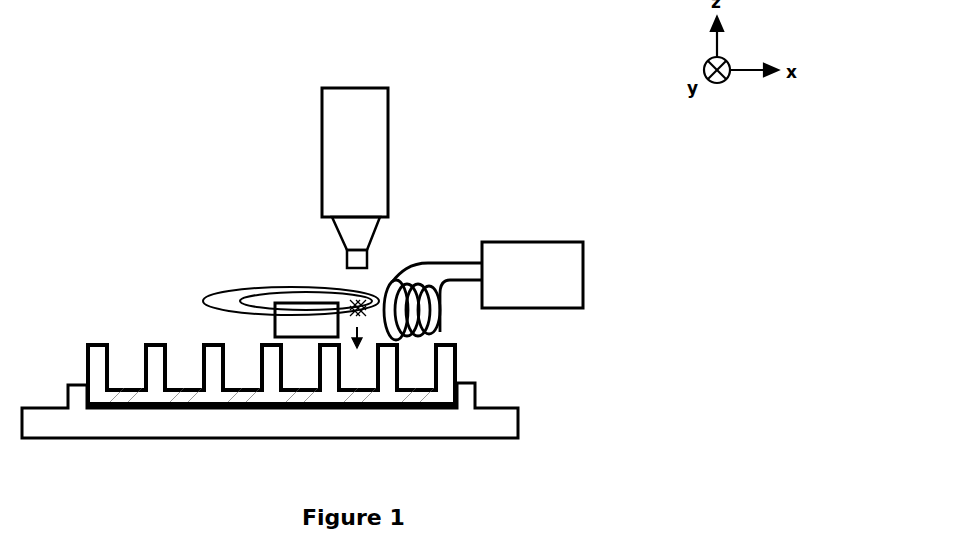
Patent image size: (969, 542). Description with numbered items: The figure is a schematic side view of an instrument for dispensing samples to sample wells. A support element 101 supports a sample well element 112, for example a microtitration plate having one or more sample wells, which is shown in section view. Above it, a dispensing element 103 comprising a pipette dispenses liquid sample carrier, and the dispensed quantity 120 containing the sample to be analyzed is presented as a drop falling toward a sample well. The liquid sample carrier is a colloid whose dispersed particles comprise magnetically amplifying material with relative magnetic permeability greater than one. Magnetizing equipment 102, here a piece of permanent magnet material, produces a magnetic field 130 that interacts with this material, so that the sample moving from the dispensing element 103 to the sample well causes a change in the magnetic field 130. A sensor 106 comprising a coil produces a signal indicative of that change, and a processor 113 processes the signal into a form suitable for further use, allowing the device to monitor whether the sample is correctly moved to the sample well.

The support element 101 is at (519, 425).
The sample well element 112 is at (456, 380).
The magnetizing equipment 102 is at (282, 302).
The magnetic field 130 is at (296, 295).
The dispensed quantity 120 is at (350, 304).
The dispensing element 103 is at (336, 168).
The sensor 106 is at (468, 243).
The processor 113 is at (514, 290).